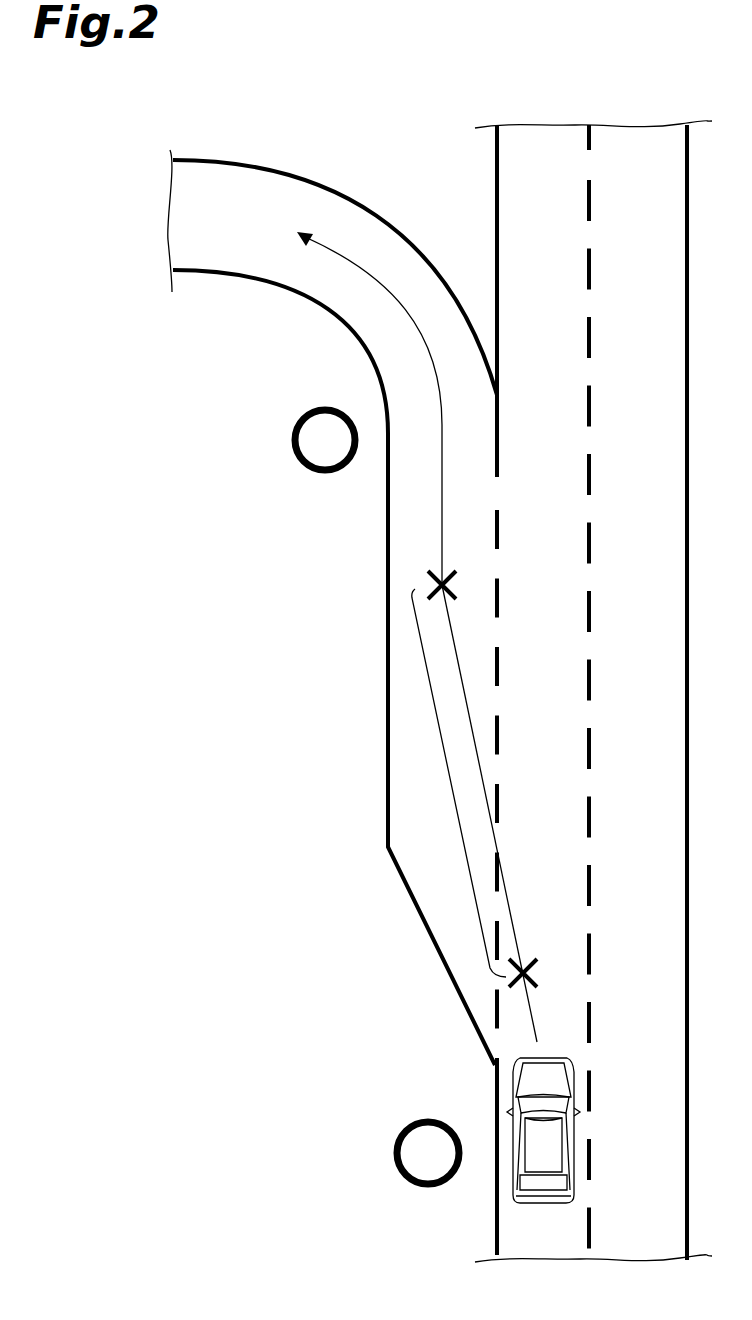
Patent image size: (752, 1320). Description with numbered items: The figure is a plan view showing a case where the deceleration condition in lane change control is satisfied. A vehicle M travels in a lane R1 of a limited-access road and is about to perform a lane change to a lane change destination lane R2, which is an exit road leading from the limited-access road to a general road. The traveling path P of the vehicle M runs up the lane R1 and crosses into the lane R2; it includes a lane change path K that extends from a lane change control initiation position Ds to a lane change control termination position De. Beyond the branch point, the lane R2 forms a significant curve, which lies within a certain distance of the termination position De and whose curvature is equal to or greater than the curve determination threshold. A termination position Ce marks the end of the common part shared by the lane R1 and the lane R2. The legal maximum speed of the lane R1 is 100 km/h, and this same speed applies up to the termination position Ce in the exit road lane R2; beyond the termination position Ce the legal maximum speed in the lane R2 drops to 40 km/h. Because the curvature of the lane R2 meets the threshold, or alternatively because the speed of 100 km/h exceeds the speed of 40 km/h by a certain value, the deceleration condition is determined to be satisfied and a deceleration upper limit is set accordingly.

The traveling lane R1 is at (544, 130).
The lane change destination lane R2 is at (220, 177).
The legal maximum speed of the exit road lane 40 is at (325, 440).
The legal maximum speed of the limited-access road lane 100 is at (428, 1153).
The termination position of the common part Ce is at (386, 465).
The traveling path P is at (440, 524).
The lane change control termination position De is at (434, 584).
The lane change control initiation position Ds is at (506, 976).
The lane change path K is at (448, 785).
The vehicle M is at (543, 1186).